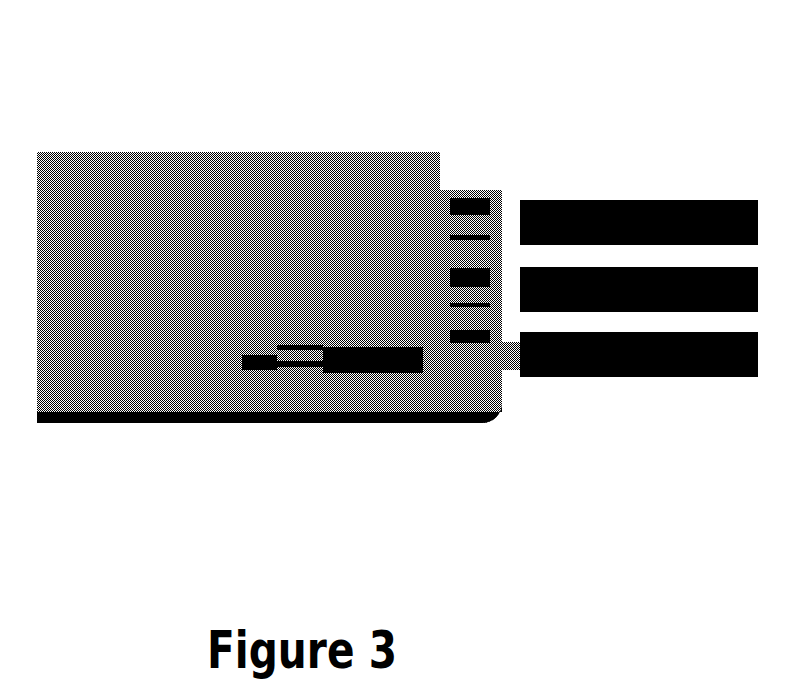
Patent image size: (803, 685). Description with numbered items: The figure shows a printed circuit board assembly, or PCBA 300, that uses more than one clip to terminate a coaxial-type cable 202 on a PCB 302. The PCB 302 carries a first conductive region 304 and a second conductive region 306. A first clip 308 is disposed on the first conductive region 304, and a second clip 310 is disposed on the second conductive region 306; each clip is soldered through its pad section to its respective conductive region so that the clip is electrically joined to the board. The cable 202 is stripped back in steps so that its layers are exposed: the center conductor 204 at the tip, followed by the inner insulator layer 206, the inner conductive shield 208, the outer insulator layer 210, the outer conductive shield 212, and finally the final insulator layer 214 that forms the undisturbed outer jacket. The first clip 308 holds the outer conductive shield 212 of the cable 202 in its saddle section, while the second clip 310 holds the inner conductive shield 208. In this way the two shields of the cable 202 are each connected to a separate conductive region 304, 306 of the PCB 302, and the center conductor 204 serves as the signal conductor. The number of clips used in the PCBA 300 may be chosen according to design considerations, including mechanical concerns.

The printed circuit board assembly 300 is at (687, 91).
The PCB 302 is at (225, 153).
The first conductive region 304 is at (400, 468).
The second conductive region 306 is at (205, 466).
The first clip 308 is at (465, 373).
The second clip 310 is at (305, 347).
The cable 202 is at (737, 403).
The center conductor 204 is at (257, 447).
The inner insulator layer 206 is at (265, 370).
The inner conductive shield 208 is at (302, 357).
The outer insulator layer 210 is at (382, 372).
The outer conductive shield 212 is at (512, 370).
The final insulator layer 214 is at (708, 377).